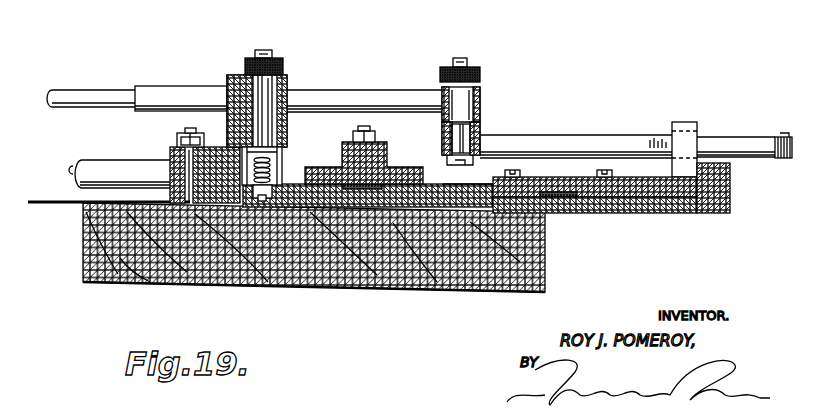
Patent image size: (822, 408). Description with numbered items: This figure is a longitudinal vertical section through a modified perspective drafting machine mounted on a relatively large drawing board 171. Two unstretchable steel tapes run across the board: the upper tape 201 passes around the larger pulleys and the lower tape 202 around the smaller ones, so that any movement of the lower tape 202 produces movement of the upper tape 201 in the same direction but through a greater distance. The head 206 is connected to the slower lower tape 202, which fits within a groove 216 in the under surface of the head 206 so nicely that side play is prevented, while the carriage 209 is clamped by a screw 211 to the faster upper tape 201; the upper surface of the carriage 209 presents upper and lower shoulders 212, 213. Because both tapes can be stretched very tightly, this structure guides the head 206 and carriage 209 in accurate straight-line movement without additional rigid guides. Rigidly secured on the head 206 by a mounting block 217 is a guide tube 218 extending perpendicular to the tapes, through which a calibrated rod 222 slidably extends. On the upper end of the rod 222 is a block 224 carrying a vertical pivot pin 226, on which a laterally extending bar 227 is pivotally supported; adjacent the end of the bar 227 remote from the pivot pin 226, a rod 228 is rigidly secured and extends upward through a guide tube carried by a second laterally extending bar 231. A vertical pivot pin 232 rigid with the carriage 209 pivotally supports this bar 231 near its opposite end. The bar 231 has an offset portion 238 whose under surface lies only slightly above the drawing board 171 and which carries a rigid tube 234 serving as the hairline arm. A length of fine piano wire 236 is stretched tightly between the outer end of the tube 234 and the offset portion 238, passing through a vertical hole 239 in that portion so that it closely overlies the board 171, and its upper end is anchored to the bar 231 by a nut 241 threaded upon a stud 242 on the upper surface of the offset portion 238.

The drawing board 171 is at (83, 262).
The upper tape 201 is at (363, 188).
The lower tape 202 is at (570, 197).
The head 206 is at (593, 163).
The carriage 209 is at (474, 180).
The clamping screw 211 is at (356, 131).
The upper shoulder 212 is at (525, 175).
The lower shoulder 213 is at (697, 193).
The groove 216 is at (556, 190).
The mounting block 217 is at (683, 122).
The guide tube 218 is at (727, 140).
The rod 222 is at (771, 138).
The block 224 is at (482, 130).
The vertical pivot pin 226 is at (456, 133).
The bar 227 is at (480, 92).
The rod 228 is at (360, 95).
The bar 231 is at (288, 84).
The vertical pivot pin 232 is at (283, 80).
The tube 234 is at (82, 172).
The piano wire 236 is at (30, 201).
The offset portion 238 is at (205, 207).
The vertical hole 239 is at (183, 158).
The nut 241 is at (177, 138).
The stud 242 is at (190, 128).